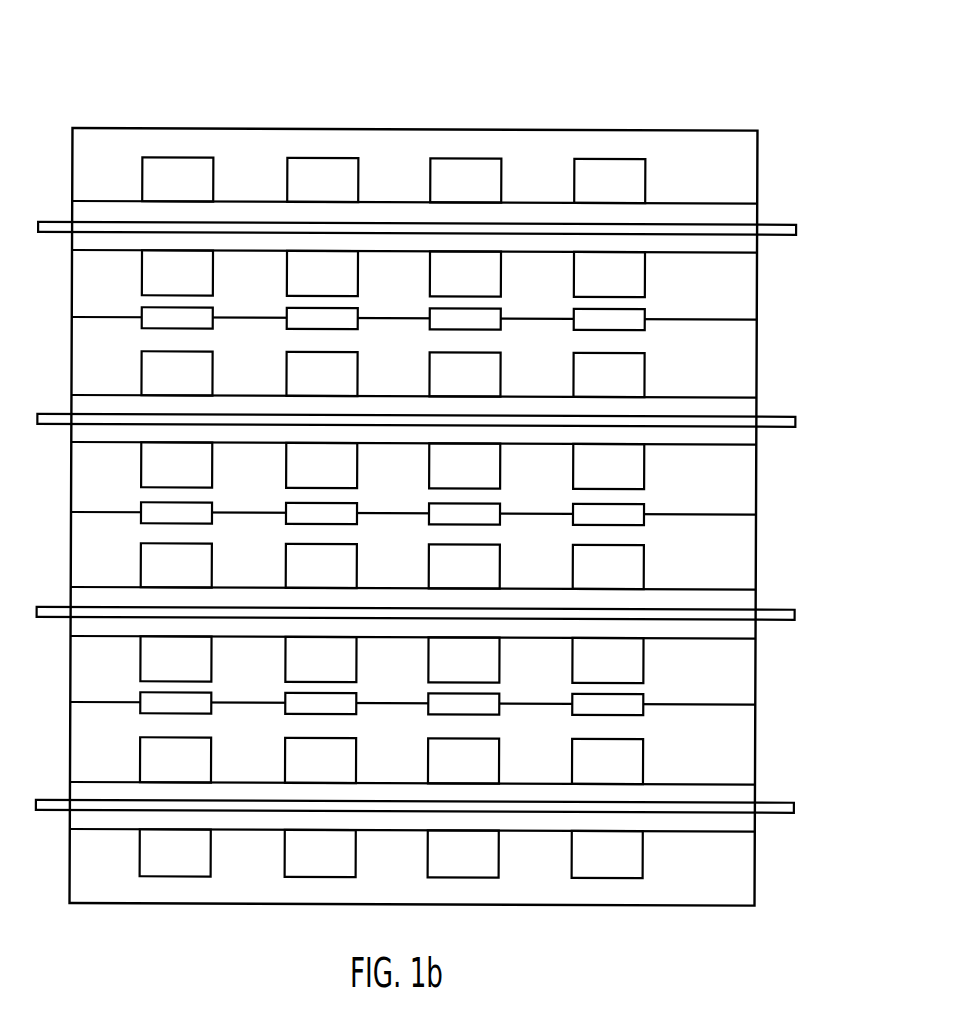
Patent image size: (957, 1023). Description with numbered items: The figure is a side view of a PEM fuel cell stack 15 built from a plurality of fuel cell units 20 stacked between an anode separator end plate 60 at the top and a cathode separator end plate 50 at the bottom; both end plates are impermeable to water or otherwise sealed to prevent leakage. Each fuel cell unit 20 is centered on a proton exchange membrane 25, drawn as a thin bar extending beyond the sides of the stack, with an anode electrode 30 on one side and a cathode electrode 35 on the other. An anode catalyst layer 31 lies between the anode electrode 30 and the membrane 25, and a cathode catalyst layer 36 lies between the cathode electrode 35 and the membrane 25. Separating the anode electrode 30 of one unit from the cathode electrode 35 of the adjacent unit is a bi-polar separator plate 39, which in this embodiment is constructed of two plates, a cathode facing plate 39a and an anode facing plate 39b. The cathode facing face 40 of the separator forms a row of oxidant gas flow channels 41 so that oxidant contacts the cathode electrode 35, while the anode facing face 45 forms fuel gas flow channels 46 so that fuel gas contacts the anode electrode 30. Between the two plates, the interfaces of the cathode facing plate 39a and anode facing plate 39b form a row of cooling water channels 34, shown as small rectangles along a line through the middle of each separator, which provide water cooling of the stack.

The fuel cell stack 15 is at (552, 85).
The fuel cell unit 20 is at (820, 229).
The proton exchange membrane 25 is at (786, 222).
The anode electrode 30 is at (757, 218).
The anode catalyst layer 31 is at (88, 222).
The cooling water channels 34 is at (214, 308).
The cathode electrode 35 is at (758, 247).
The cathode catalyst layer 36 is at (90, 236).
The bi-polar separator plate 39 is at (70, 317).
The cathode facing plate 39a is at (757, 283).
The anode facing plate 39b is at (757, 350).
The cathode facing face 40 is at (91, 252).
The oxidant gas flow channels 41 is at (170, 272).
The anode facing face 45 is at (90, 395).
The fuel gas flow channels 46 is at (150, 373).
The cathode separator end plate 50 is at (758, 878).
The anode separator end plate 60 is at (758, 170).